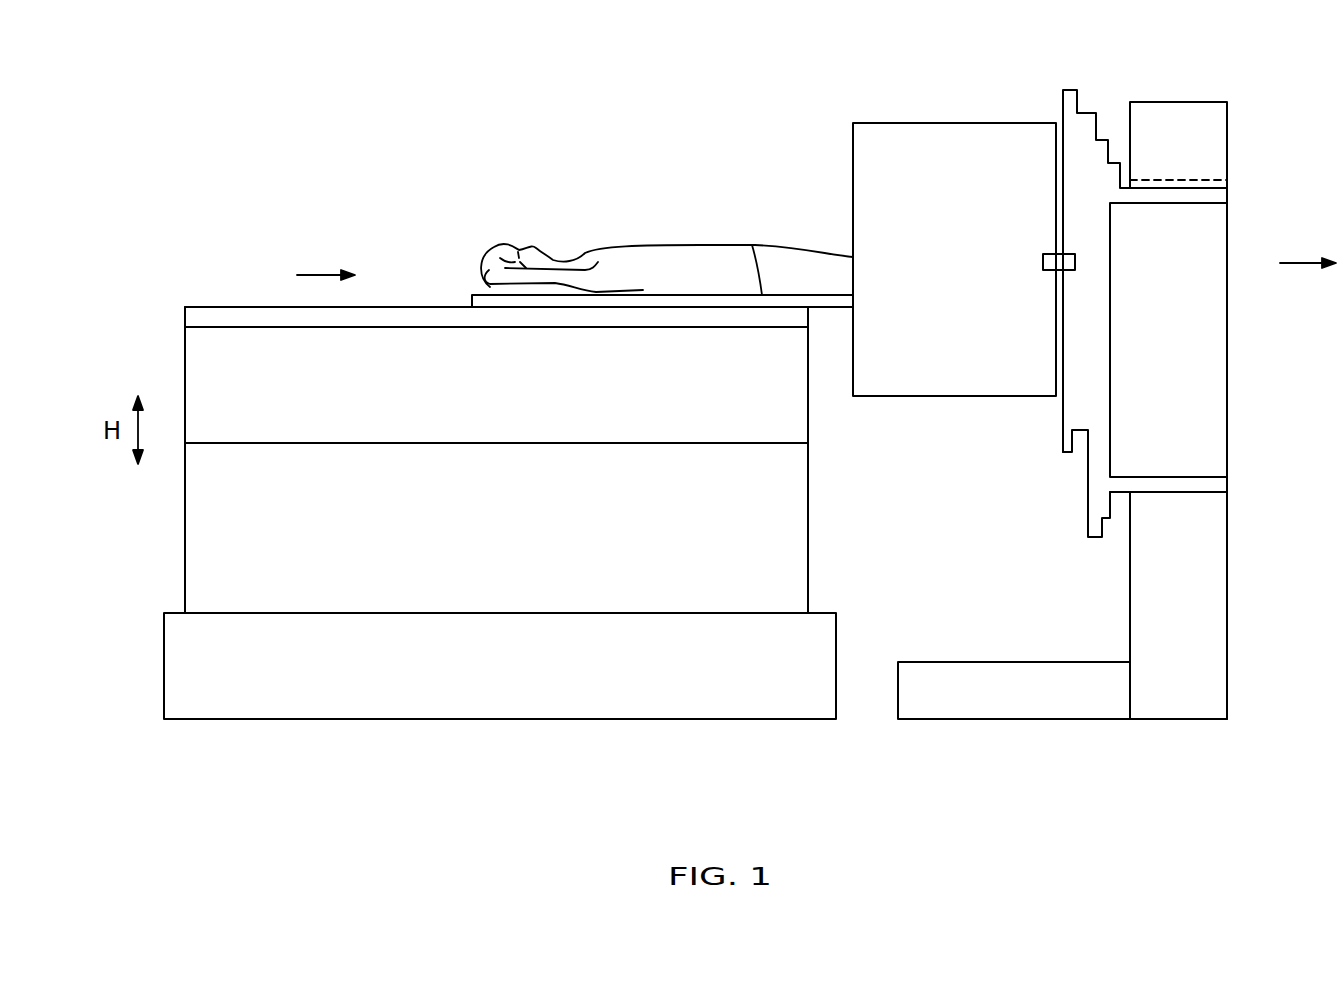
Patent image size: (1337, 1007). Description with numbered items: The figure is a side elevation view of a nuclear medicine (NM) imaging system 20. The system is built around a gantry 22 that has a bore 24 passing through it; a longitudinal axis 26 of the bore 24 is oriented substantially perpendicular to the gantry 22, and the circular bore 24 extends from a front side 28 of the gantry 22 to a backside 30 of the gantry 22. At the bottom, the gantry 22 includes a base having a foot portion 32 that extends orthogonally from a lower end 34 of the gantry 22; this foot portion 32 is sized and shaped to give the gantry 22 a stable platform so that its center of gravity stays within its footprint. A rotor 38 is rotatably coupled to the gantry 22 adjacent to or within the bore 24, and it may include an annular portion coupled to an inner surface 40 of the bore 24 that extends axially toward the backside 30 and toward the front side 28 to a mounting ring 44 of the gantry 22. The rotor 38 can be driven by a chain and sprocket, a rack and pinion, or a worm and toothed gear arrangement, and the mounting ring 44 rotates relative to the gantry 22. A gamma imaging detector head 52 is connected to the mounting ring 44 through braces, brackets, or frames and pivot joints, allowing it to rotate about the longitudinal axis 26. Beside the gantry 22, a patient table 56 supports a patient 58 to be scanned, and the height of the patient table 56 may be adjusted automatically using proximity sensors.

The NM imaging system 20 is at (498, 758).
The gantry 22 is at (1217, 597).
The bore 24 is at (1287, 348).
The longitudinal axis 26 is at (323, 275).
The front side 28 is at (1130, 632).
The backside 30 is at (1228, 145).
The foot portion 32 is at (958, 672).
The lower end 34 is at (1217, 692).
The rotor 38 is at (1113, 99).
The inner surface 40 is at (1168, 182).
The mounting ring 44 is at (1108, 520).
The gamma imaging detector head 52 is at (853, 157).
The patient table 56 is at (802, 315).
The patient 58 is at (583, 257).